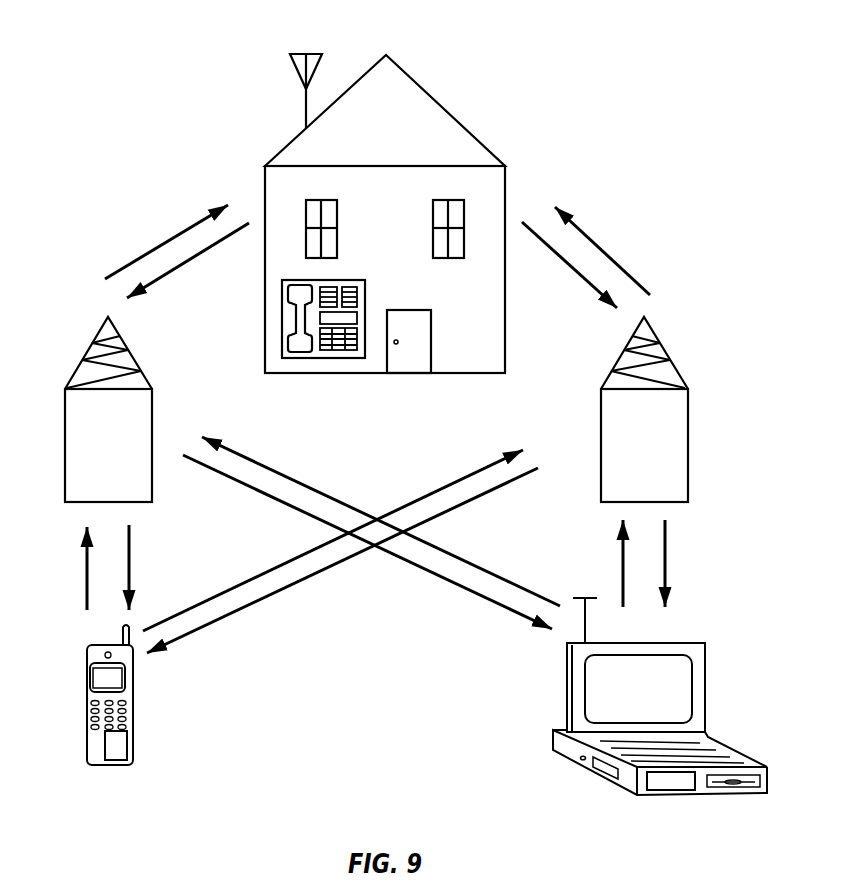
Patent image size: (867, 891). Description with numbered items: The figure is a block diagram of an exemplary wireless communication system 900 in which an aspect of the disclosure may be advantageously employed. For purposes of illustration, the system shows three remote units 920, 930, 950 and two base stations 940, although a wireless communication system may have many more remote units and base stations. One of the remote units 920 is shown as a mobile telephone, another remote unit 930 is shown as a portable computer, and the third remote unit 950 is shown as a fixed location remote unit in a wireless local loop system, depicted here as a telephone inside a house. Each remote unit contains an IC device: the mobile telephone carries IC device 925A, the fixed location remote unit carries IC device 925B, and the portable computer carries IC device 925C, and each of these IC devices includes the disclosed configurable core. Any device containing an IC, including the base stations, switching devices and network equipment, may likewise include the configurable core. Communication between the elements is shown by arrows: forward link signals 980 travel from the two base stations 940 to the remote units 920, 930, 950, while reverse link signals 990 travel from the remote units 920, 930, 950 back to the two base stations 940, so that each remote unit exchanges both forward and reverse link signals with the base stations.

The wireless communication system 900 is at (127, 92).
The remote unit 920 is at (78, 716).
The IC device 925A is at (117, 750).
The IC device 925B is at (347, 317).
The IC device 925C is at (677, 783).
The remote unit 930 is at (660, 718).
The base station 940 is at (88, 350).
The remote unit 950 is at (294, 346).
The forward link signal 980 is at (172, 238).
The reverse link signal 990 is at (177, 268).